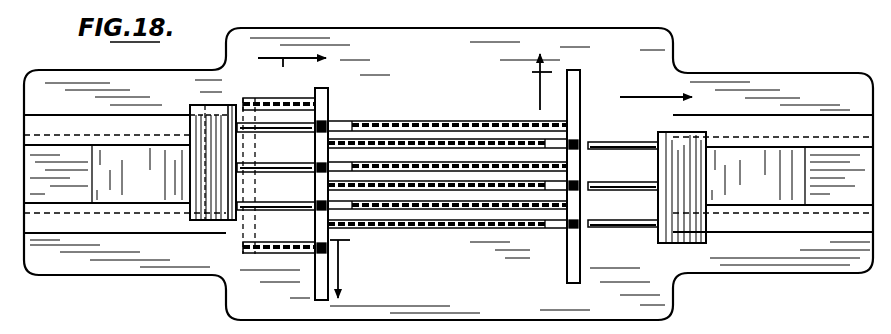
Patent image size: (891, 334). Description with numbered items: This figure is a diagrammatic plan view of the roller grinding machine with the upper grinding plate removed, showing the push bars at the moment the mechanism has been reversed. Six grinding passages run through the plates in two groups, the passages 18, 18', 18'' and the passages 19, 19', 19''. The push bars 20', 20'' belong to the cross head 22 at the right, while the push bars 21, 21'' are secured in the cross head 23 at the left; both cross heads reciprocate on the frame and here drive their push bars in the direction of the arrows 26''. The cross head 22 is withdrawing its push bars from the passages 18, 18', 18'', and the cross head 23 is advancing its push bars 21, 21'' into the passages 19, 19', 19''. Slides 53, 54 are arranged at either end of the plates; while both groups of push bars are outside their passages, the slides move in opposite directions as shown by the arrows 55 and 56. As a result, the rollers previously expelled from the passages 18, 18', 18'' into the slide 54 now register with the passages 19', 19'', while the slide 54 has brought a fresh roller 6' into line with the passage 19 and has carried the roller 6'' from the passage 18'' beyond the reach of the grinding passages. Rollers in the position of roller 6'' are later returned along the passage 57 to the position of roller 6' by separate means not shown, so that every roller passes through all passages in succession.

The cross head 23 is at (192, 112).
The cross head 22 is at (702, 236).
The slide 54 is at (322, 99).
The slide 53 is at (581, 77).
The push bar 21 is at (278, 130).
The push bar 21'' is at (276, 219).
The roller 6' is at (295, 140).
The roller 6'' is at (310, 250).
The passage 19 is at (447, 113).
The passage 19' is at (447, 135).
The passage 19'' is at (431, 210).
The passage 18 is at (592, 130).
The passage 18' is at (593, 171).
The passage 18'' is at (555, 247).
The push bar 20' is at (623, 179).
The push bar 20'' is at (623, 242).
The arrow 26'' is at (475, 77).
The arrow 55 is at (540, 88).
The arrow 56 is at (343, 280).
The passage 57 is at (248, 230).